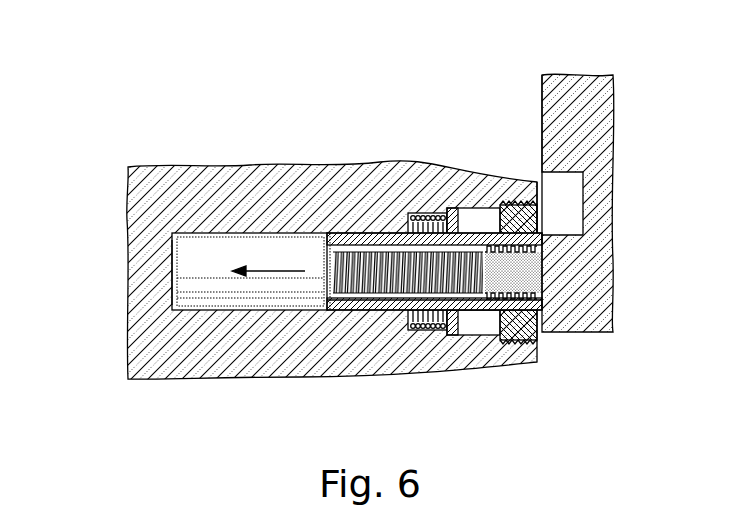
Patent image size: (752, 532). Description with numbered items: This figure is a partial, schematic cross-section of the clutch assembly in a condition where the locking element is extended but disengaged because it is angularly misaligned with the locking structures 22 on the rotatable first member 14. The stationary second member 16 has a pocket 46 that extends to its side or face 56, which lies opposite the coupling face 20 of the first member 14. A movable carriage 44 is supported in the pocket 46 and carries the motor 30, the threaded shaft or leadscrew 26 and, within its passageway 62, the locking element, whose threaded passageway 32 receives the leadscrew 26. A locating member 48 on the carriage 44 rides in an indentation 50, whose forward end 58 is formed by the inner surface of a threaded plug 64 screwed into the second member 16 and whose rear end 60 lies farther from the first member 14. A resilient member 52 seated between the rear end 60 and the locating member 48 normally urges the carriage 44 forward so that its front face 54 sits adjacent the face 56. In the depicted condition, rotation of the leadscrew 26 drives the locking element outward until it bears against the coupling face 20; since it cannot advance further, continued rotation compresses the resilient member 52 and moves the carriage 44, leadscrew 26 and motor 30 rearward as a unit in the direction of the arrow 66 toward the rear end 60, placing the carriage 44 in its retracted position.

The first member 14 is at (592, 103).
The second member 16 is at (148, 178).
The side or face 20 is at (541, 90).
The locking structure 22 is at (546, 209).
The threaded shaft or leadscrew 26 is at (350, 273).
The motor 30 is at (197, 253).
The threaded passageway 32 is at (522, 262).
The carriage 44 is at (378, 236).
The pocket 46 is at (172, 265).
The locating member 48 is at (450, 220).
The indentation 50 is at (472, 215).
The resilient member 52 is at (427, 330).
The front or forward end or face 54 is at (537, 240).
The side or face 56 is at (540, 350).
The forward end 58 is at (497, 206).
The rear end 60 is at (425, 214).
The passageway 62 is at (378, 300).
The threaded plug 64 is at (533, 325).
The arrow 66 is at (272, 268).